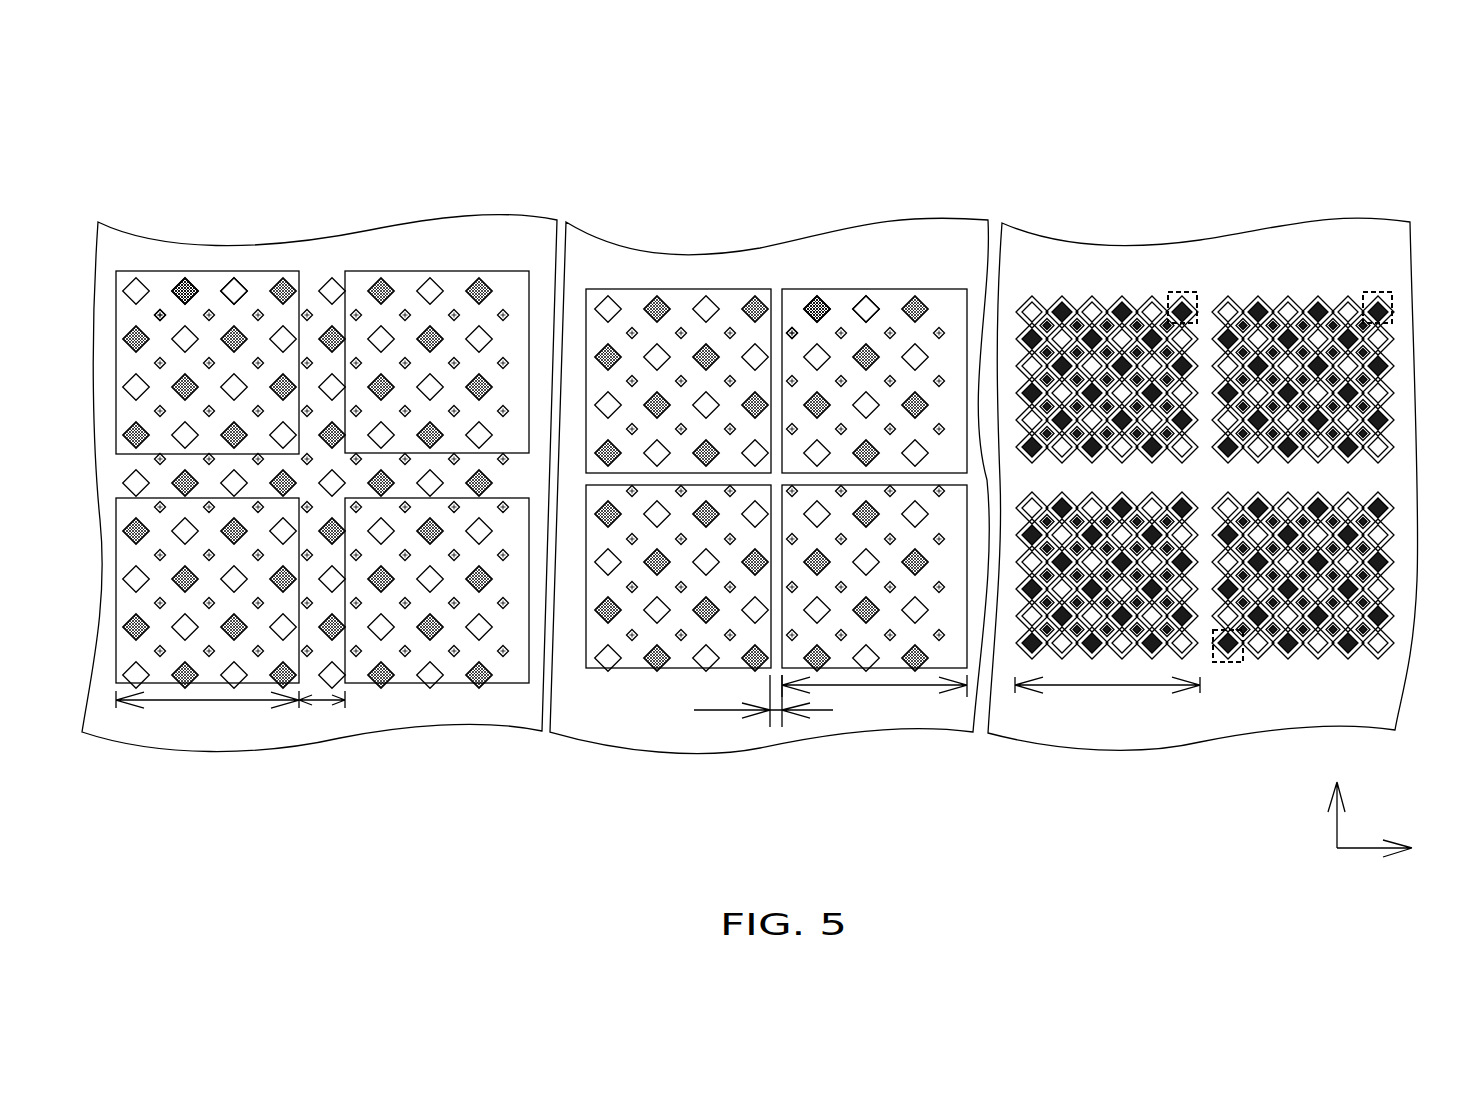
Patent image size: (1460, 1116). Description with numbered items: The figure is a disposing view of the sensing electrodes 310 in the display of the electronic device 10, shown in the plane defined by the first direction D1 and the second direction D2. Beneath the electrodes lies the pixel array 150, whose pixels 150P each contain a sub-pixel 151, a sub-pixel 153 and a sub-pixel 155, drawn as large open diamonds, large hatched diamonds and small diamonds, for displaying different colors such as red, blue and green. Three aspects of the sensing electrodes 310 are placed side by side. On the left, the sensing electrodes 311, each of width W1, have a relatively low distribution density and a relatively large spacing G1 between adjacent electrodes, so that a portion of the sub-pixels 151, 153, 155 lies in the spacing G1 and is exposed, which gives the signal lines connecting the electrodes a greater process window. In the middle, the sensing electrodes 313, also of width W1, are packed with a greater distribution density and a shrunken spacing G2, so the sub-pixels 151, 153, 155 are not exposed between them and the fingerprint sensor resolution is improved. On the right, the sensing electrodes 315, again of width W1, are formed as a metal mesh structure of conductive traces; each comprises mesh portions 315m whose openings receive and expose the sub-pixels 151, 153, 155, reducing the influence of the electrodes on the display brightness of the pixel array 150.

The electronic device 10 is at (1303, 126).
The pixel array 150 is at (610, 386).
The pixel 150P is at (610, 386).
The sub-pixel 151 is at (232, 290).
The sub-pixel 153 is at (305, 197).
The sub-pixel 155 is at (190, 290).
The sensing electrodes 310 is at (753, 452).
The sensing electrodes 311 is at (160, 760).
The sensing electrodes 313 is at (680, 288).
The sensing electrodes 315 is at (1180, 300).
The mesh portion 315m is at (1372, 293).
The width W1 is at (658, 707).
The spacing G1 is at (322, 715).
The spacing G2 is at (763, 701).
The first direction D1 is at (1332, 797).
The second direction D2 is at (1395, 847).